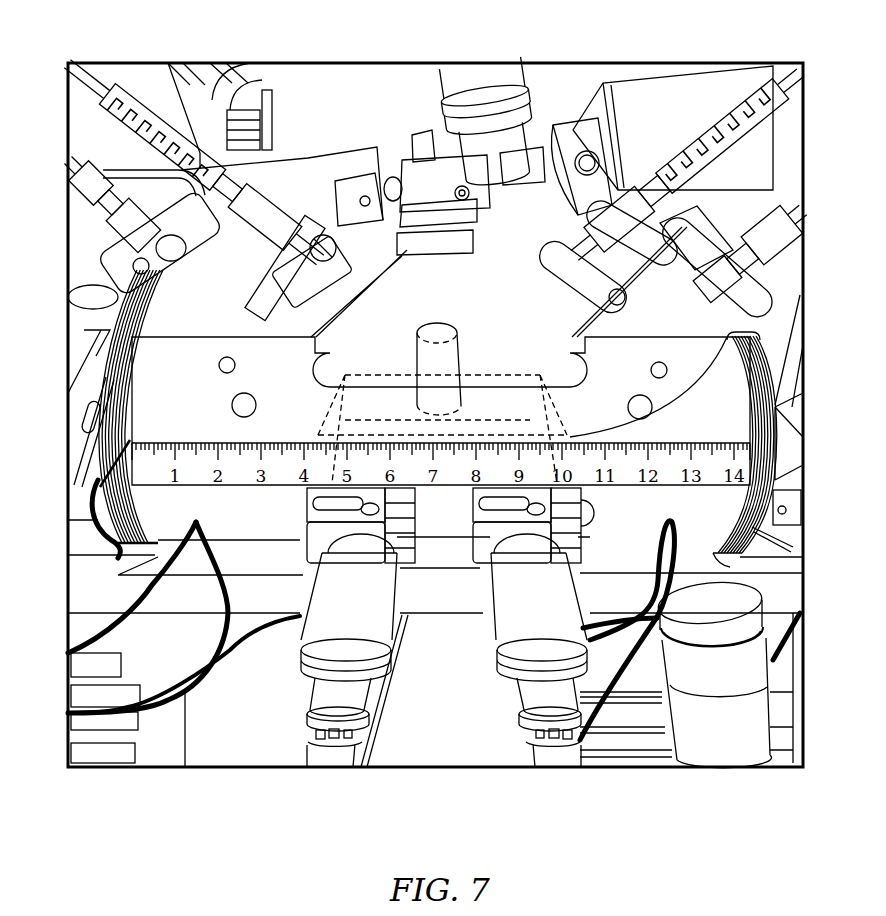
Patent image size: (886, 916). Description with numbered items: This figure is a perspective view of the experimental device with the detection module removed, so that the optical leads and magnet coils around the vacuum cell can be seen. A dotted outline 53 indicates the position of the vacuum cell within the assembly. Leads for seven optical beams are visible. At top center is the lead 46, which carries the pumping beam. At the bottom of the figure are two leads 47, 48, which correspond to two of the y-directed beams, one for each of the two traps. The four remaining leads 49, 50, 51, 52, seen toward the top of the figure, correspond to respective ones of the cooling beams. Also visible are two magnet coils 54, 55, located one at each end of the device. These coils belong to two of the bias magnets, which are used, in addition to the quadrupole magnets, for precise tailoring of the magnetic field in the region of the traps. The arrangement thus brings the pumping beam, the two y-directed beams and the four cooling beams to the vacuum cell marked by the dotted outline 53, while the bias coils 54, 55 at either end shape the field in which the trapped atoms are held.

The lead 46 is at (487, 76).
The lead 47 is at (331, 761).
The lead 48 is at (566, 761).
The lead 49 is at (72, 176).
The lead 50 is at (72, 70).
The lead 51 is at (800, 83).
The lead 52 is at (800, 214).
The dotted outline 53 is at (762, 338).
The magnet coil 54 is at (128, 484).
The magnet coil 55 is at (793, 470).